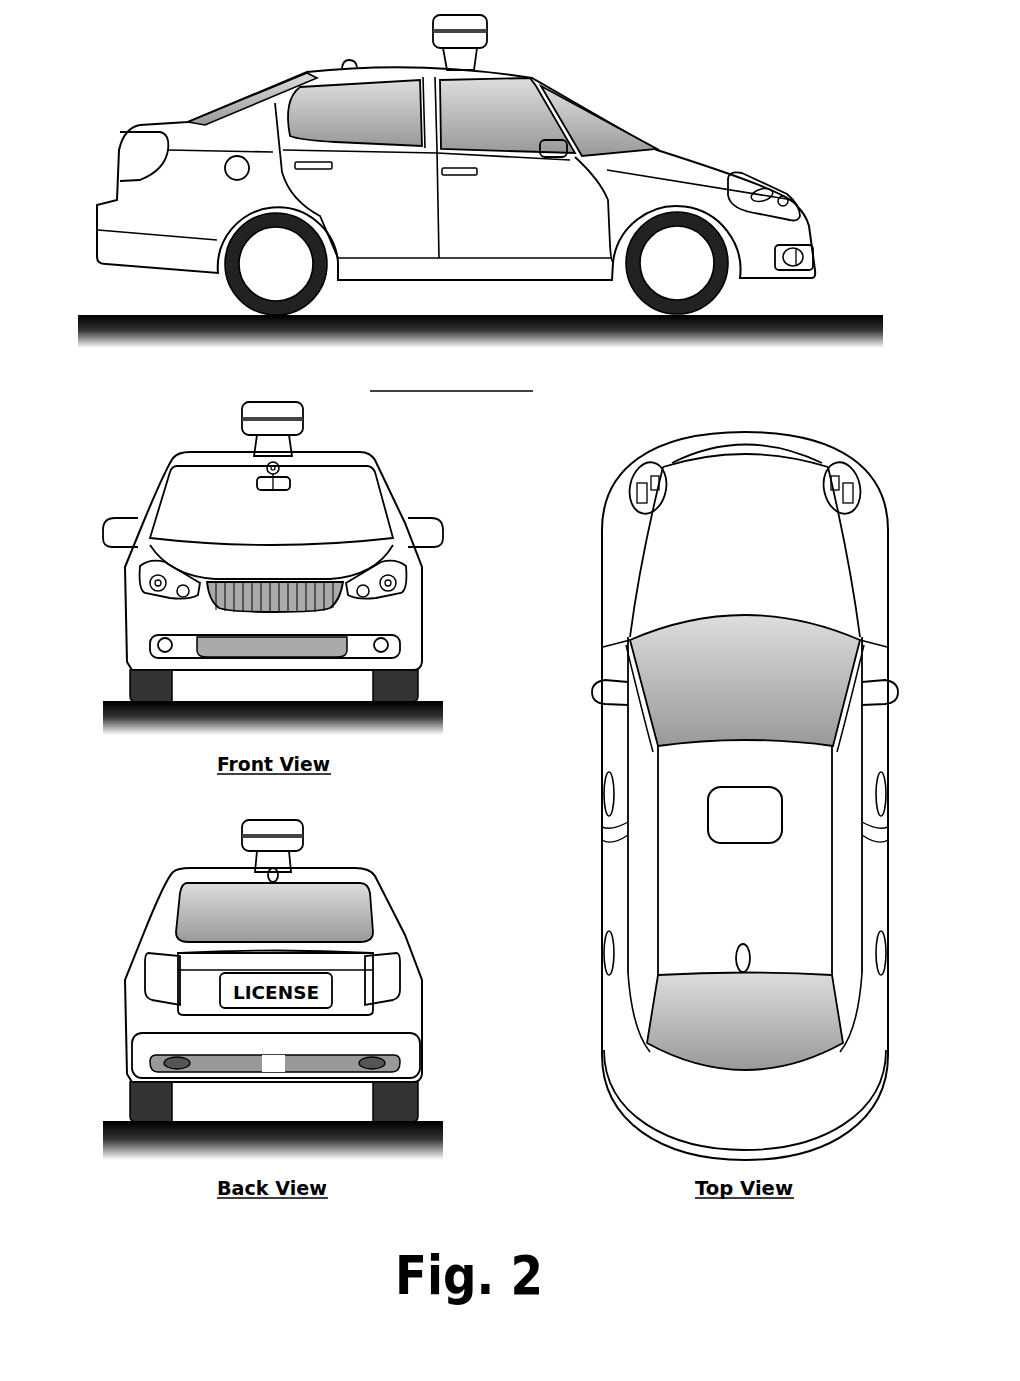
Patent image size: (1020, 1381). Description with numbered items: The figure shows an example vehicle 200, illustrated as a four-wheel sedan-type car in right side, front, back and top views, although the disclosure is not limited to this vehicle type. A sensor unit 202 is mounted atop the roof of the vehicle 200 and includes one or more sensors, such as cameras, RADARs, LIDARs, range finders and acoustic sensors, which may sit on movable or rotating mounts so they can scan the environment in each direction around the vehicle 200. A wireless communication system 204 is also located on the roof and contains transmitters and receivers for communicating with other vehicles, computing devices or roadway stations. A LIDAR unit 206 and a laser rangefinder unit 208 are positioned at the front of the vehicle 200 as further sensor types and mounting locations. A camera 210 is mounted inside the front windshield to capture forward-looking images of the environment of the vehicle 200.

The vehicle 200 is at (90, 114).
The sensor unit 202 is at (487, 42).
The wireless communication system 204 is at (341, 60).
The LIDAR unit 206 is at (810, 257).
The laser rangefinder unit 208 is at (795, 203).
The camera 210 is at (290, 471).